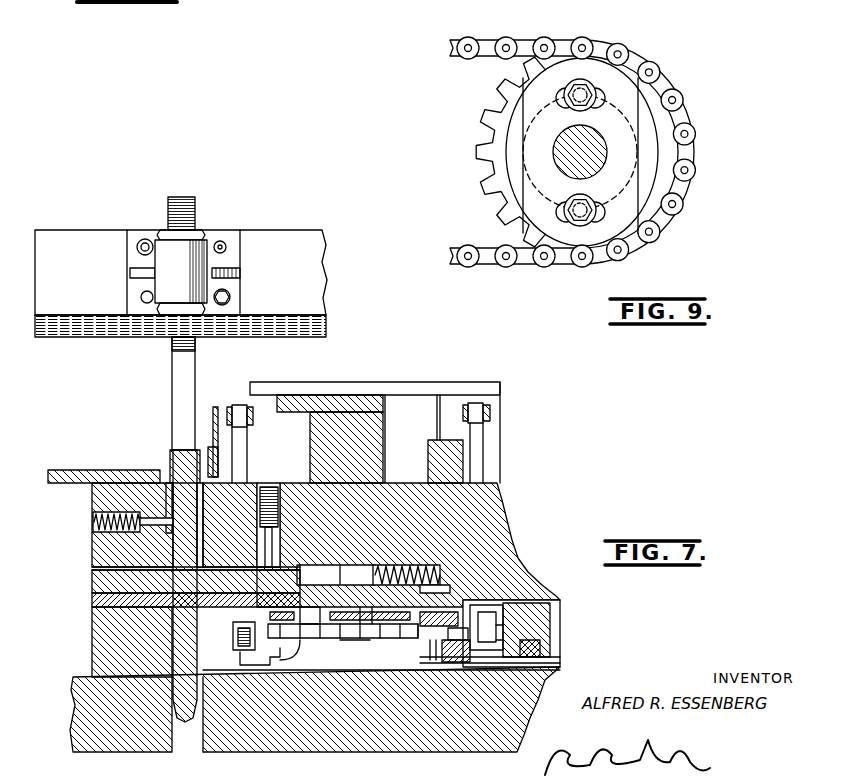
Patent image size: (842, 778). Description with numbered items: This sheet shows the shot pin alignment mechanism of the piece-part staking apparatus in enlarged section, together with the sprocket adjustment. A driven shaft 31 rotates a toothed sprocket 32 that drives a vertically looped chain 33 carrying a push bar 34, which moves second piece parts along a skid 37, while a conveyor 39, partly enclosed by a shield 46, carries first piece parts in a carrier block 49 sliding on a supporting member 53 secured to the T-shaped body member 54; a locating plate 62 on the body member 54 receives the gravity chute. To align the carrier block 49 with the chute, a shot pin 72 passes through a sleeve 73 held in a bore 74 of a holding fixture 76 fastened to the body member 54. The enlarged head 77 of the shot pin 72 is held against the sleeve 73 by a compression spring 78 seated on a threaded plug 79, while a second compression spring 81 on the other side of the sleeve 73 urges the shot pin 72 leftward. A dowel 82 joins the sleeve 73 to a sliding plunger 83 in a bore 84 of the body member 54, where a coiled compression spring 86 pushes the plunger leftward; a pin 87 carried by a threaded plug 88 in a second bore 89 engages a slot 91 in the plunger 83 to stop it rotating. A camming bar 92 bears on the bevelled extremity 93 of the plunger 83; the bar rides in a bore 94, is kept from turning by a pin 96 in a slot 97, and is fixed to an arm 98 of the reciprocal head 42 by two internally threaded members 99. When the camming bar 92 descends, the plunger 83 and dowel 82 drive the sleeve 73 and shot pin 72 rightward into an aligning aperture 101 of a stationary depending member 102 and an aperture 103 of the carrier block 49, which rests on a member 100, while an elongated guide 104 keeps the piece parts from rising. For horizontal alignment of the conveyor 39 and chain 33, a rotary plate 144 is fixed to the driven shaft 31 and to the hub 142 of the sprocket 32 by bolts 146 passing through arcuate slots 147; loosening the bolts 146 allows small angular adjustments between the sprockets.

In FIG. 9, the driven shaft 31 is at (582, 156).
In FIG. 9, the toothed sprocket 32 is at (492, 114).
In FIG. 7, the chain 33 is at (247, 395).
In FIG. 9, the chain 33 is at (526, 37).
In FIG. 7, the push bar 34 is at (339, 383).
In FIG. 7, the skid 37 is at (369, 400).
In FIG. 7, the conveyor 39 is at (490, 410).
In FIG. 7, the head 42 is at (283, 232).
In FIG. 7, the shield 46 is at (214, 408).
In FIG. 7, the carrier block 49 is at (515, 732).
In FIG. 7, the supporting member 53 is at (430, 464).
In FIG. 7, the body member 54 is at (500, 500).
In FIG. 7, the locating plate 62 is at (490, 602).
In FIG. 7, the shot pin 72 is at (425, 645).
In FIG. 7, the sleeve 73 is at (310, 645).
In FIG. 7, the bore 74 is at (370, 645).
In FIG. 7, the holding fixture 76 is at (325, 645).
In FIG. 7, the enlarged head 77 is at (285, 645).
In FIG. 7, the compression spring 78 is at (262, 658).
In FIG. 7, the threaded plug 79 is at (300, 622).
In FIG. 7, the second compression spring 81 is at (343, 631).
In FIG. 7, the dowel 82 is at (466, 597).
In FIG. 7, the sliding plunger 83 is at (380, 560).
In FIG. 7, the bore 84 is at (240, 597).
In FIG. 7, the coiled compression spring 86 is at (442, 574).
In FIG. 7, the pin 87 is at (498, 486).
In FIG. 7, the threaded plug 88 is at (275, 484).
In FIG. 7, the second bore 89 is at (267, 486).
In FIG. 7, the slot 91 is at (165, 568).
In FIG. 7, the camming bar 92 is at (174, 363).
In FIG. 7, the bevelled extremity 93 is at (255, 575).
In FIG. 7, the bore 94 is at (205, 700).
In FIG. 7, the pin 96 is at (122, 510).
In FIG. 7, the slot 97 is at (155, 540).
In FIG. 7, the arm 98 is at (195, 258).
In FIG. 7, the internally threaded member 99 is at (160, 304).
In FIG. 7, the member 100 is at (545, 650).
In FIG. 7, the aligning aperture 101 is at (452, 645).
In FIG. 7, the stationary depending member 102 is at (445, 660).
In FIG. 7, the aperture 103 is at (540, 666).
In FIG. 7, the elongated guide 104 is at (458, 660).
In FIG. 9, the hub 142 is at (508, 165).
In FIG. 9, the rotary plate 144 is at (522, 143).
In FIG. 9, the bolt 146 is at (582, 97).
In FIG. 9, the arcuate slot 147 is at (560, 101).